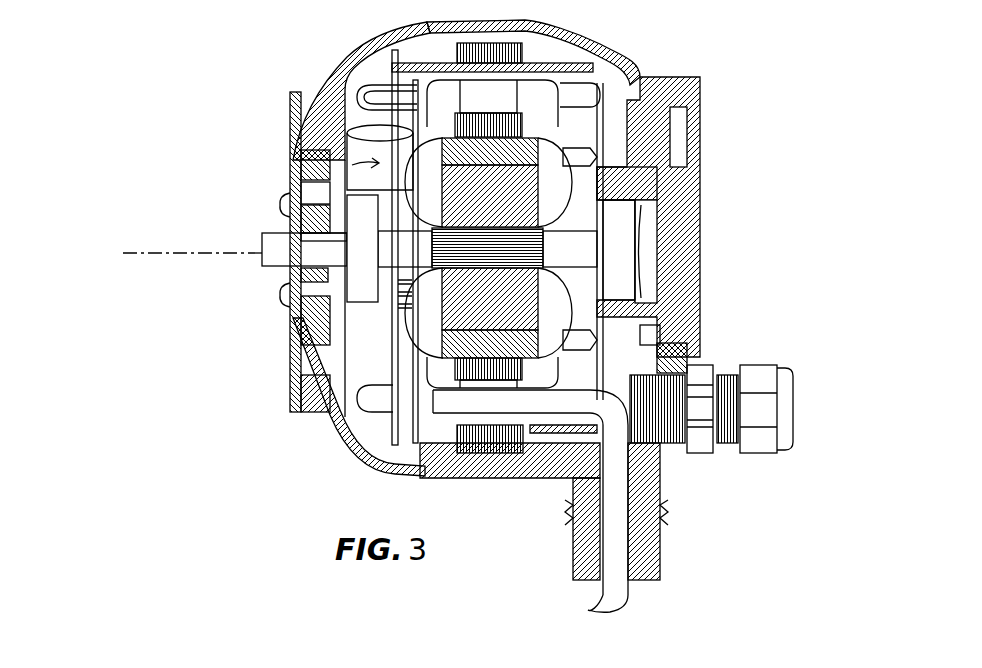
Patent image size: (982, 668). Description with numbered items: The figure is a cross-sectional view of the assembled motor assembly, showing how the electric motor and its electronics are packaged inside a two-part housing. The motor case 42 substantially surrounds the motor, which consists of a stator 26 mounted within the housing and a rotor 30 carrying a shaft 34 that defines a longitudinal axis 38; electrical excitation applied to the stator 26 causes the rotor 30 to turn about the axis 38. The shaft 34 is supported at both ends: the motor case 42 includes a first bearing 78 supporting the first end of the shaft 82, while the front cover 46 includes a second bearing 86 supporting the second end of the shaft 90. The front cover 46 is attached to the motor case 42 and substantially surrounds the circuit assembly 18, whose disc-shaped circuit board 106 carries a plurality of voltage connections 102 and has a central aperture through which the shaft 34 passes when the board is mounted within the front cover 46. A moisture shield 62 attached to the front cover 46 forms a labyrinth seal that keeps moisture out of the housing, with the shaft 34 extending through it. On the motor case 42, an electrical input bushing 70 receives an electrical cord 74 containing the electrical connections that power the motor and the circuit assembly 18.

The circuit assembly 18 is at (345, 152).
The stator 26 is at (668, 110).
The rotor 30 is at (610, 197).
The shaft 34 is at (268, 266).
The longitudinal axis 38 is at (133, 253).
The motor case 42 is at (633, 72).
The front cover 46 is at (330, 66).
The moisture shield 62 is at (293, 318).
The electrical input bushing 70 is at (643, 537).
The electrical cord 74 is at (623, 607).
The first bearing 78 is at (637, 217).
The first end of the shaft 82 is at (618, 263).
The second bearing 86 is at (287, 198).
The second end of the shaft 90 is at (290, 230).
The voltage connections 102 is at (410, 441).
The circuit board 106 is at (385, 437).